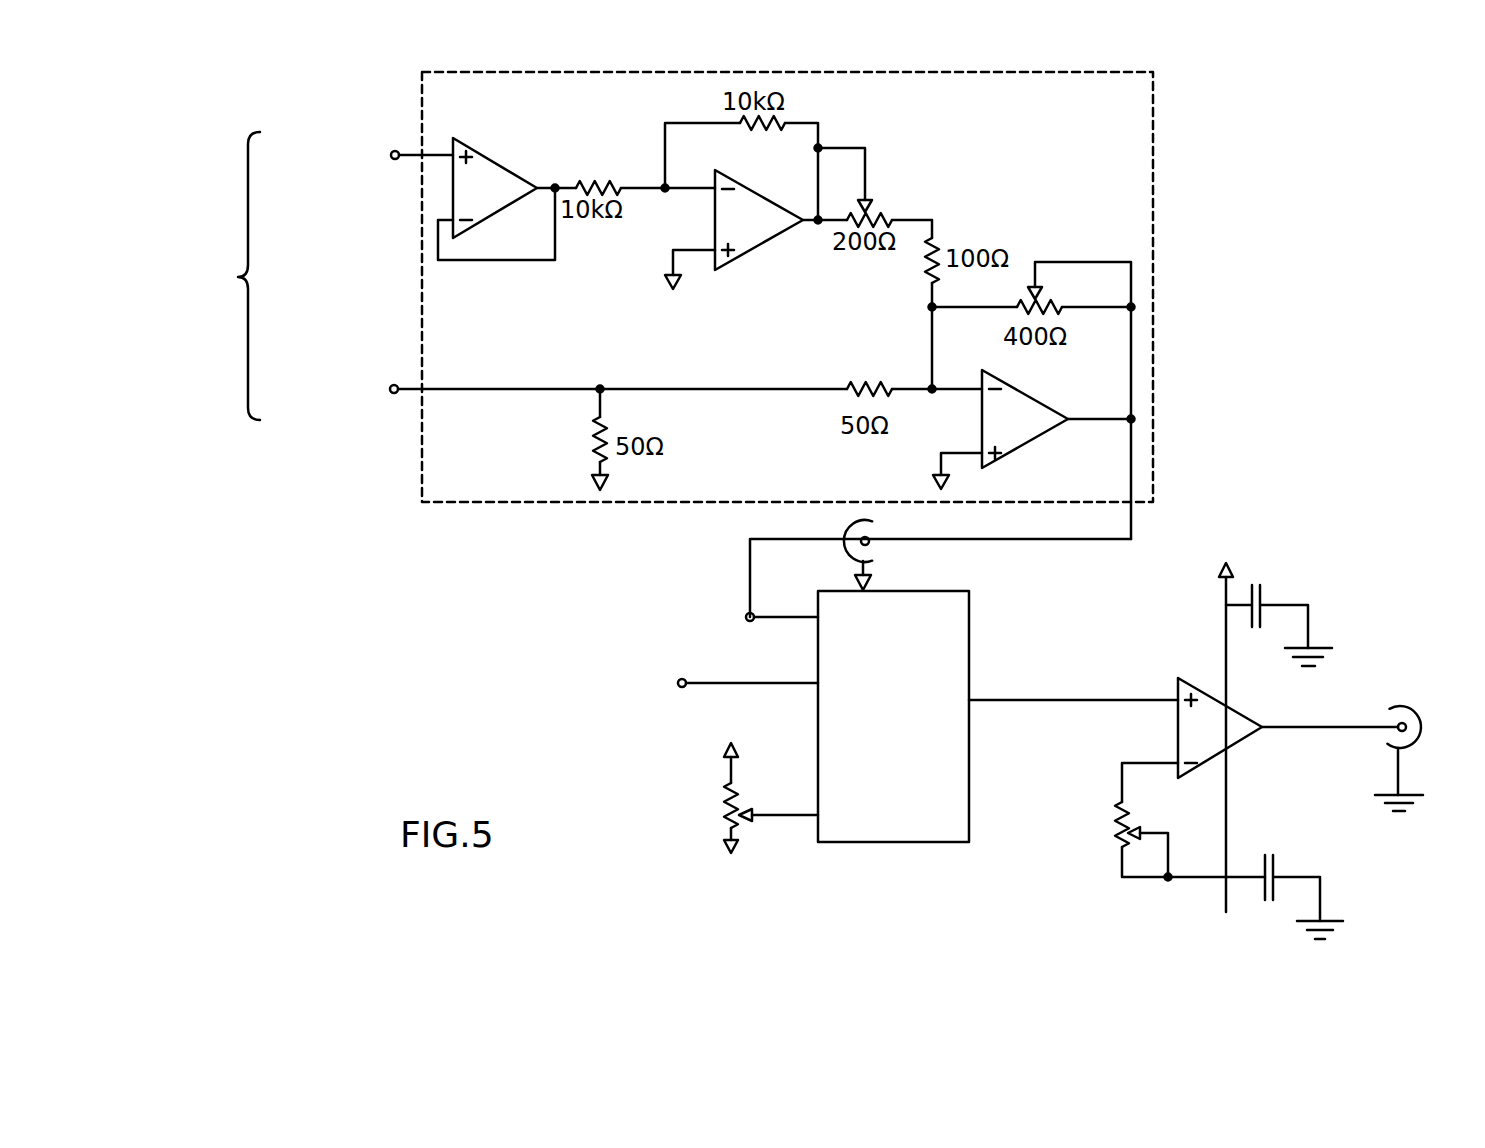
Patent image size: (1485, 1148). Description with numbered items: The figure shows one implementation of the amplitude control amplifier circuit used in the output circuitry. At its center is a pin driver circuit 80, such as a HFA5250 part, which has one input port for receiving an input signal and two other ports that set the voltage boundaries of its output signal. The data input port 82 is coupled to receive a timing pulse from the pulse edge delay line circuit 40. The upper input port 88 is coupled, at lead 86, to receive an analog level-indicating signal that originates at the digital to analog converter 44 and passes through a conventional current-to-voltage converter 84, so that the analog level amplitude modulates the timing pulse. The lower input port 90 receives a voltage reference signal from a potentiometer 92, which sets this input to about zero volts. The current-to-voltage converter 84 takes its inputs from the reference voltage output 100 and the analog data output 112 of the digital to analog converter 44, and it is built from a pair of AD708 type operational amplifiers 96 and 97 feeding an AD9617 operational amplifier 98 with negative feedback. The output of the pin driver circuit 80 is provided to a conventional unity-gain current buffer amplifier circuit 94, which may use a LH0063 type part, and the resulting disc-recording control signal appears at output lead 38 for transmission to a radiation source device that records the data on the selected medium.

The output lead 38 is at (1415, 712).
The pulse edge delay line circuit 40 is at (665, 700).
The digital to analog converter 44 is at (232, 295).
The pin driver circuit 80 is at (970, 608).
The data input port 82 is at (818, 684).
The current-to-voltage converter 84 is at (1155, 145).
The lead 86 is at (746, 617).
The upper input port 88 is at (848, 556).
The lower input port 90 is at (817, 818).
The potentiometer 92 is at (731, 782).
The unity-gain current buffer amplifier circuit 94 is at (1202, 688).
The operational amplifier 96 is at (493, 170).
The operational amplifier 97 is at (760, 195).
The operational amplifier 98 is at (1023, 447).
The reference voltage output 100 is at (397, 150).
The analog output terminal 112 is at (410, 392).